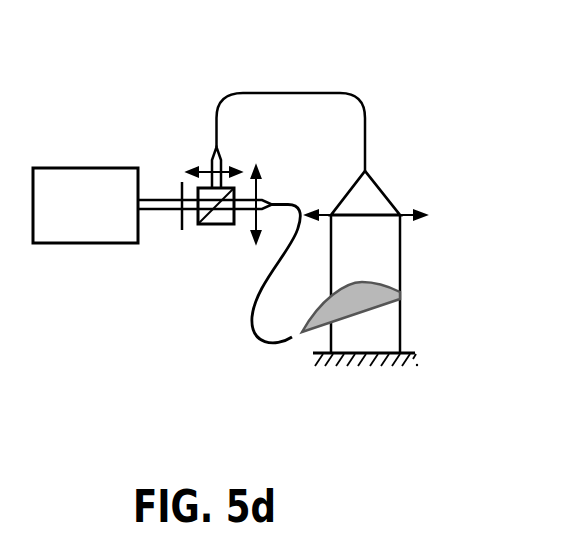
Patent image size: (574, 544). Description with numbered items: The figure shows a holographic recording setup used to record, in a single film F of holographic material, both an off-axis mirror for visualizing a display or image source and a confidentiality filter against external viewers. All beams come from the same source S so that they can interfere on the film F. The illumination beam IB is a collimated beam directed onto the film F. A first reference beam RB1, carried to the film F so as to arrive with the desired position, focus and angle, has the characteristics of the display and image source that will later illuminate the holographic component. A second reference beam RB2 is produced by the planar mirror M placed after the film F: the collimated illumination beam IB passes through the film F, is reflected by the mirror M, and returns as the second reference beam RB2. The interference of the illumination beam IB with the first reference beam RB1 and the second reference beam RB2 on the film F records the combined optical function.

The source S is at (85, 205).
The illumination beam IB is at (368, 258).
The film of holographic material F is at (290, 338).
The first reference beam RB1 is at (245, 274).
The second reference beam RB2 is at (360, 340).
The planar mirror M is at (393, 362).